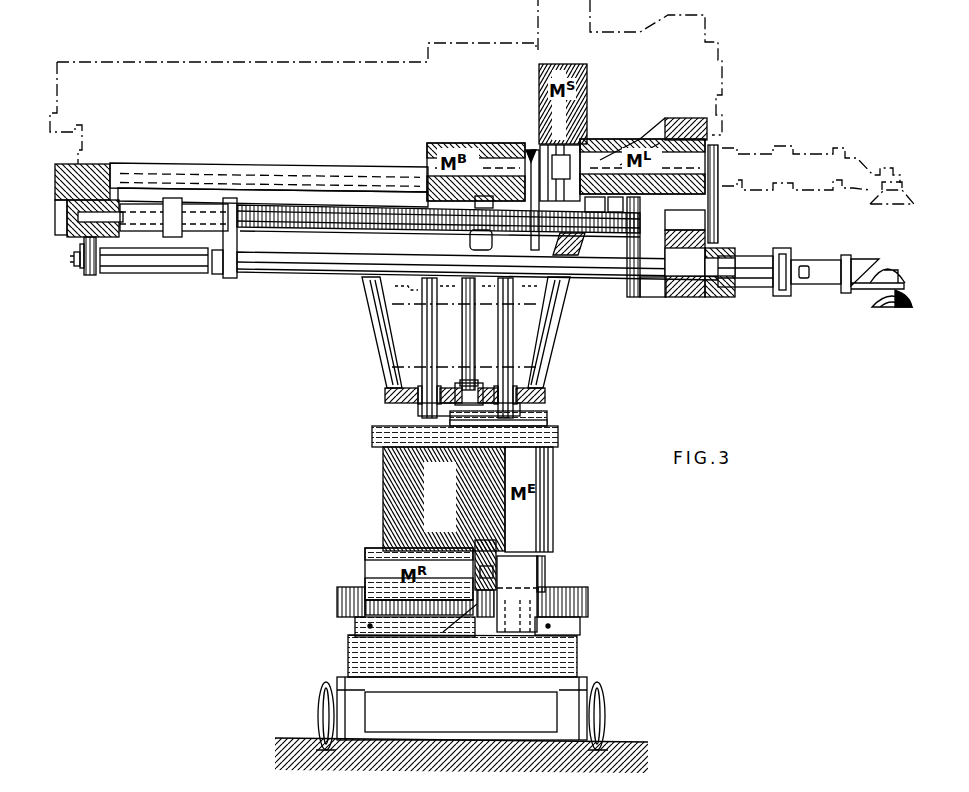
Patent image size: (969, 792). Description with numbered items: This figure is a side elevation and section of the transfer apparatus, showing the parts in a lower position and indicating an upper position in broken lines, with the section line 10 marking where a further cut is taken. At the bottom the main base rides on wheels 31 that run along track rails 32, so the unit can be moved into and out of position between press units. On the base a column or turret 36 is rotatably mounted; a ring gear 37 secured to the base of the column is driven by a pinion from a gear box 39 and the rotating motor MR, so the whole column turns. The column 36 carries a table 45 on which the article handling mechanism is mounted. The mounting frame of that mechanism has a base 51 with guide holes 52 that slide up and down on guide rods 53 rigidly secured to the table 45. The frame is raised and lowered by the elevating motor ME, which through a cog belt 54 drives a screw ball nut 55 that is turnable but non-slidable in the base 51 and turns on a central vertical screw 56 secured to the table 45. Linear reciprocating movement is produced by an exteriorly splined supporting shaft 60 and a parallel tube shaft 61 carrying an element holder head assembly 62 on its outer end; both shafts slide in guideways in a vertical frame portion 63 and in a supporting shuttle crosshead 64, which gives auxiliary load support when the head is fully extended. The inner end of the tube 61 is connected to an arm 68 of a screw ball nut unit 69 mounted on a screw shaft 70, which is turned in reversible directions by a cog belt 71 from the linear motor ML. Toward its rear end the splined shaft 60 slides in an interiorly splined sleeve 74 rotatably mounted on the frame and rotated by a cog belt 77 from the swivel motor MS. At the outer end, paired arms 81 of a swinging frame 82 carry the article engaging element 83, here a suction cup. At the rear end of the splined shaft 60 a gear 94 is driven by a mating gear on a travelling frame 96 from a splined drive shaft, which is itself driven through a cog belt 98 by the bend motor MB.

The section line 10- 10 is at (78, 258).
The wheels 31 is at (318, 692).
The track rails 32 is at (318, 744).
The column or turret 36 is at (383, 497).
The ring gear 37 is at (338, 600).
The gear box 39 is at (522, 580).
The table 45 is at (376, 436).
The base 51 is at (386, 395).
The guide holes 52 is at (418, 408).
The guide rods 53 is at (425, 322).
The cog belt 54 is at (548, 414).
The screw ball nut 55 is at (480, 386).
The central vertical screw 56 is at (469, 348).
The splined supporting rod or shaft 60 is at (171, 270).
The fluid rod, tube, or shaft 61 is at (336, 277).
The element holder head assembly 62 is at (778, 248).
The vertical frame portion 63 is at (690, 290).
The supporting shuttle crosshead 64 is at (728, 290).
The arm or projection 68 is at (229, 276).
The screw ball nut unit 69 is at (178, 230).
The screw shaft 70 is at (300, 206).
The cog belt 71 is at (720, 204).
The splined sleeve 74 is at (655, 290).
The cog belt 77 is at (630, 290).
The paired arms 81 is at (820, 260).
The swinging frame 82 is at (853, 292).
The article engaging element 83 is at (888, 308).
The gear 94 is at (88, 276).
The travelling frame 96 is at (65, 271).
The cog belt 98 is at (541, 245).